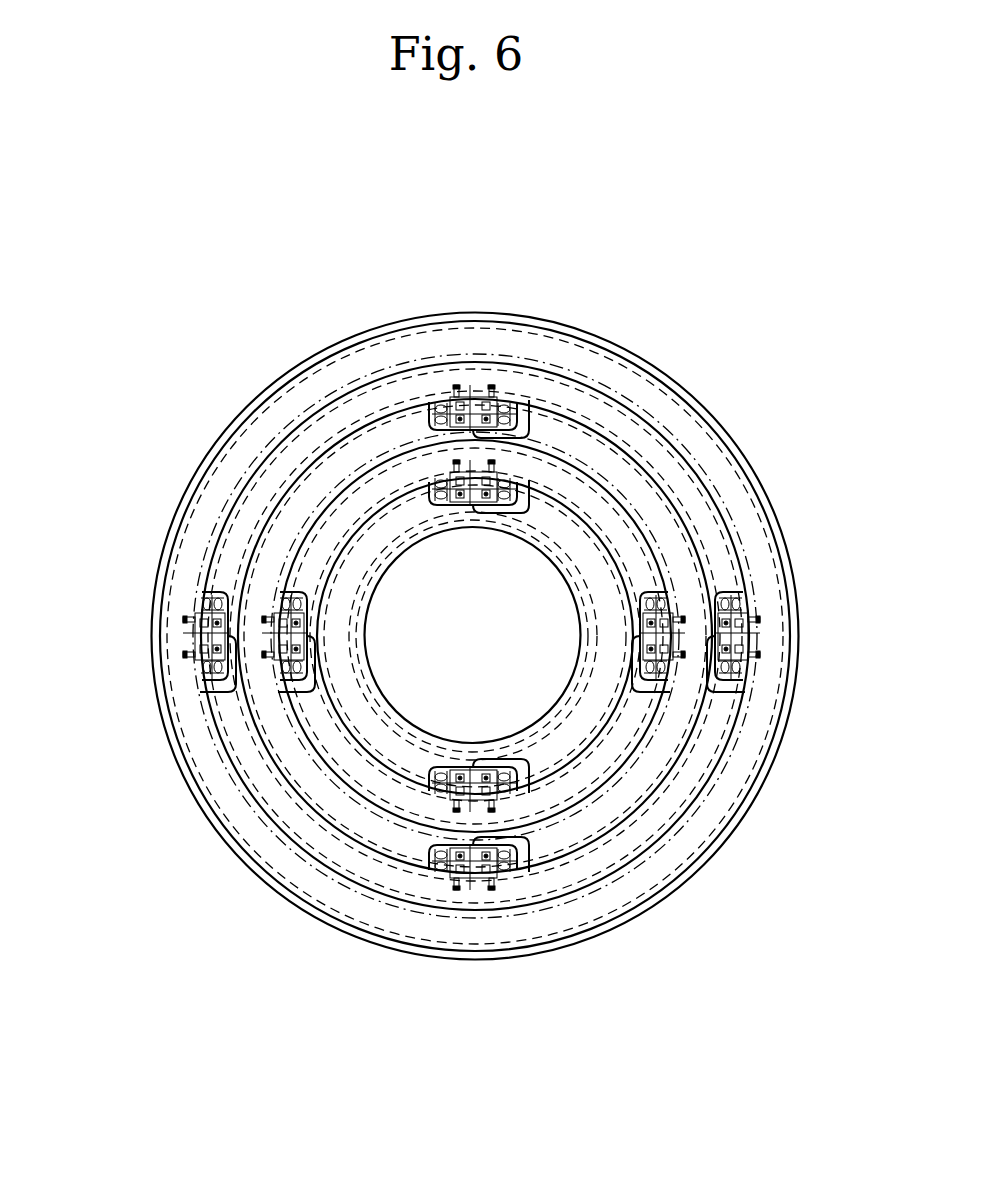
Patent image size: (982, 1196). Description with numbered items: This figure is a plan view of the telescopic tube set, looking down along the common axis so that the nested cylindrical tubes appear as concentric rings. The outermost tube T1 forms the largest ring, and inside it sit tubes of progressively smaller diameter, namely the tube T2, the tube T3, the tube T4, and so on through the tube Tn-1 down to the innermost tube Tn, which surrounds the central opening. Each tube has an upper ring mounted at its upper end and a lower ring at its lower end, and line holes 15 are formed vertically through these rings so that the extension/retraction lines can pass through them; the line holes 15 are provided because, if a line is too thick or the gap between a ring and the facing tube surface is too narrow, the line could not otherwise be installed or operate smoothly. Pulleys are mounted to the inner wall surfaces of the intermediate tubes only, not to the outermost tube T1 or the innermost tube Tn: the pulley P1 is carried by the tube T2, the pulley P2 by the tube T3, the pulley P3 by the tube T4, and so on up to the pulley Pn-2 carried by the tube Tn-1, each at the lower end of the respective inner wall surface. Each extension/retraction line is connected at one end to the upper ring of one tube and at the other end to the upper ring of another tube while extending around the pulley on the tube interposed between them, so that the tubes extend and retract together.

The outermost cylindrical tube T1 is at (320, 355).
The second cylindrical tube T2 is at (300, 413).
The third cylindrical tube T3 is at (290, 472).
The fourth cylindrical tube T4 is at (302, 520).
The (n-1)th cylindrical tube Tn-1 is at (327, 548).
The innermost cylindrical tube Tn is at (362, 605).
The line hole 15 is at (513, 490).
The first pulley P1 is at (215, 718).
The second pulley P2 is at (400, 863).
The third pulley P3 is at (293, 723).
The (n-2)th pulley Pn-2 is at (400, 777).